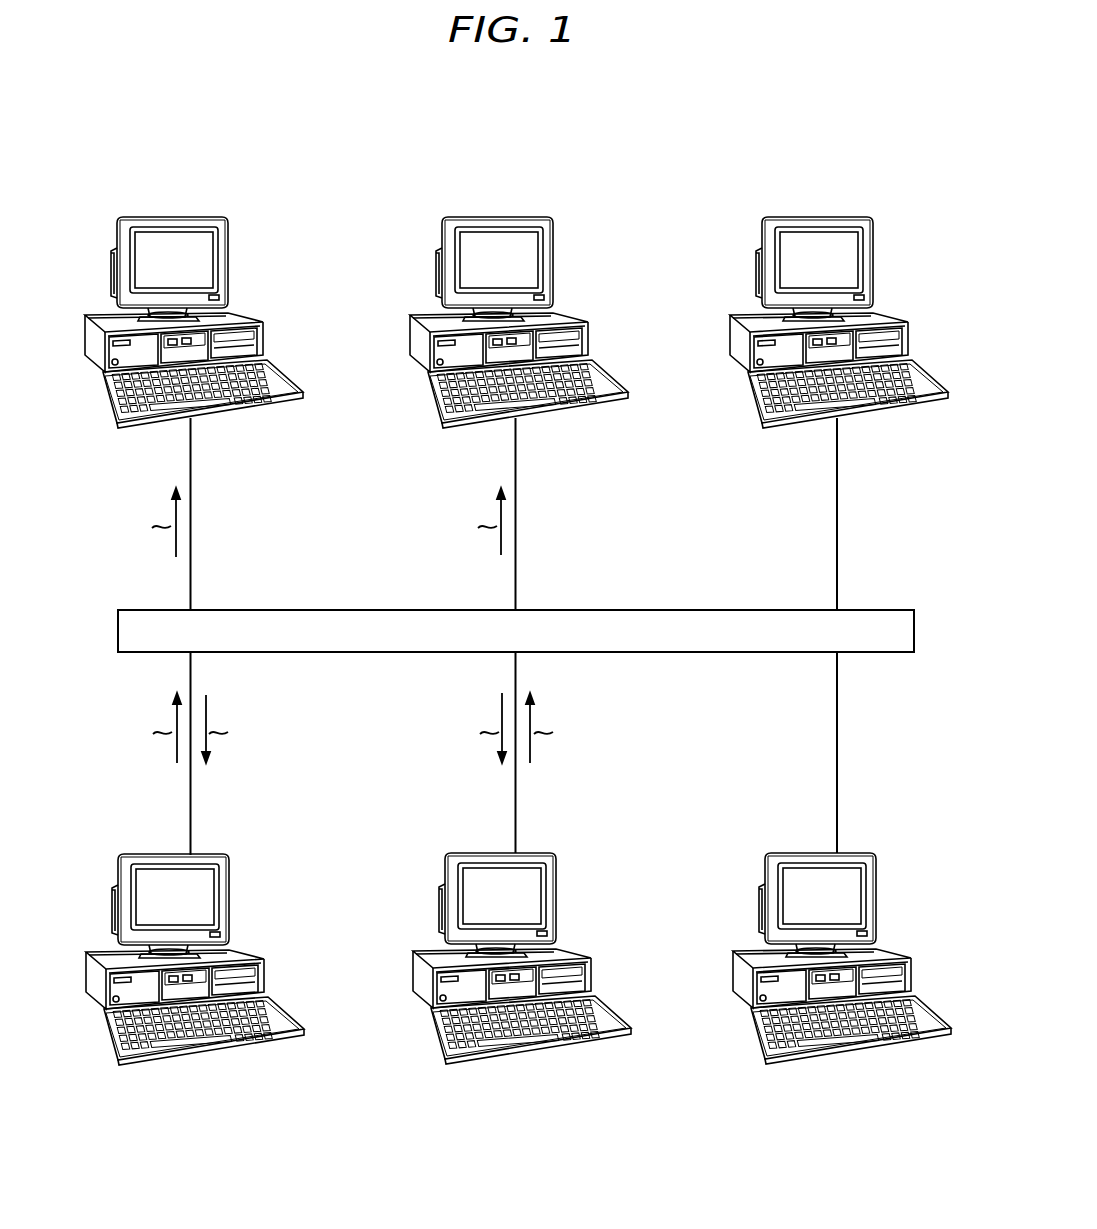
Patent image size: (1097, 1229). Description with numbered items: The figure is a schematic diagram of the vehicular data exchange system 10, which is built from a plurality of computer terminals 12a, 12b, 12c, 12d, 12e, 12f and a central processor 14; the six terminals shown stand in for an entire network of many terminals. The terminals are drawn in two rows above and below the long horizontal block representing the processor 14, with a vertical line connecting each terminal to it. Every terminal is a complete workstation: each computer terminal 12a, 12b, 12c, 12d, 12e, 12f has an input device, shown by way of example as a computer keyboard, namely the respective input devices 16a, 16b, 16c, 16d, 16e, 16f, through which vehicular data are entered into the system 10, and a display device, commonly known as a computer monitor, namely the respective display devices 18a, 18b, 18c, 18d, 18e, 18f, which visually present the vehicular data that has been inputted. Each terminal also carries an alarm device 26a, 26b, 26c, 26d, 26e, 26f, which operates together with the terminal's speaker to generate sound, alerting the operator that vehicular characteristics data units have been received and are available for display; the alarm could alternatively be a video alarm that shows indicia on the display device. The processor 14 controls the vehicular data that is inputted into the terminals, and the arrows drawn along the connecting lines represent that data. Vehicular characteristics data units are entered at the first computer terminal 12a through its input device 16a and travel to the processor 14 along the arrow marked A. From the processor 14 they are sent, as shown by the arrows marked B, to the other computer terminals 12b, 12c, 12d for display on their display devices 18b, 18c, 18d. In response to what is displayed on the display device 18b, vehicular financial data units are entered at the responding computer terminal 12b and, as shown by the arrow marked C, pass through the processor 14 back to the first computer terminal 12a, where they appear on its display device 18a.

The vehicular data exchange system 10 is at (694, 128).
The processor 14 is at (690, 610).
The computer terminal 12a is at (508, 949).
The computer terminal 12b is at (181, 950).
The computer terminal 12c is at (236, 227).
The computer terminal 12d is at (505, 313).
The computer terminal 12e is at (825, 313).
The computer terminal 12f is at (828, 949).
The input device 16a is at (519, 1044).
The input device 16b is at (192, 1045).
The input device 16c is at (132, 427).
The input device 16d is at (516, 408).
The input device 16e is at (836, 408).
The input device 16f is at (839, 1044).
The display device 18a is at (527, 905).
The display device 18b is at (200, 906).
The display device 18c is at (206, 263).
The display device 18d is at (524, 269).
The display device 18e is at (844, 269).
The display device 18f is at (848, 905).
The alarm device 26a is at (488, 990).
The alarm device 26b is at (161, 991).
The alarm device 26c is at (116, 349).
The alarm device 26d is at (485, 354).
The alarm device 26e is at (805, 354).
The alarm device 26f is at (808, 990).